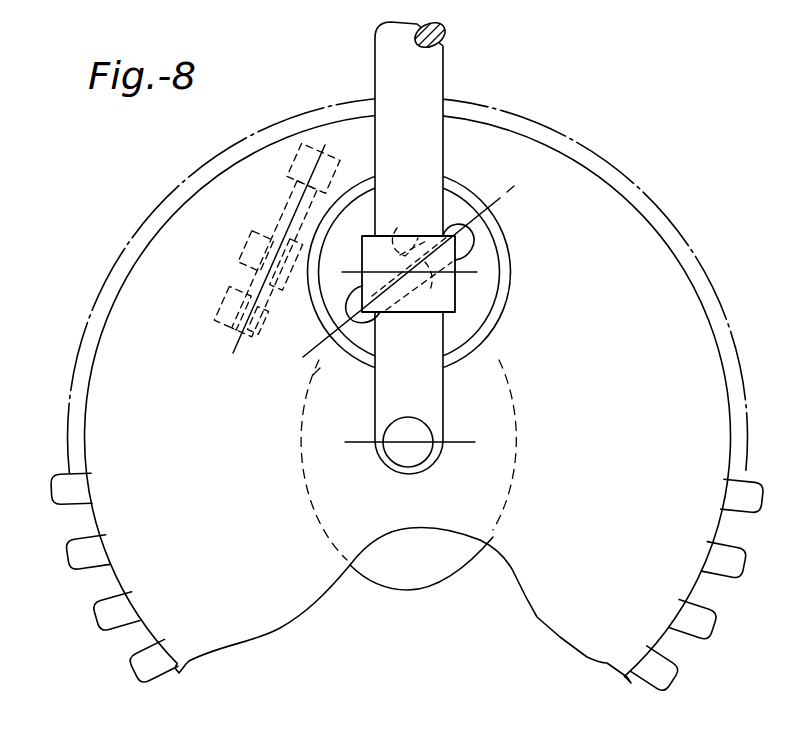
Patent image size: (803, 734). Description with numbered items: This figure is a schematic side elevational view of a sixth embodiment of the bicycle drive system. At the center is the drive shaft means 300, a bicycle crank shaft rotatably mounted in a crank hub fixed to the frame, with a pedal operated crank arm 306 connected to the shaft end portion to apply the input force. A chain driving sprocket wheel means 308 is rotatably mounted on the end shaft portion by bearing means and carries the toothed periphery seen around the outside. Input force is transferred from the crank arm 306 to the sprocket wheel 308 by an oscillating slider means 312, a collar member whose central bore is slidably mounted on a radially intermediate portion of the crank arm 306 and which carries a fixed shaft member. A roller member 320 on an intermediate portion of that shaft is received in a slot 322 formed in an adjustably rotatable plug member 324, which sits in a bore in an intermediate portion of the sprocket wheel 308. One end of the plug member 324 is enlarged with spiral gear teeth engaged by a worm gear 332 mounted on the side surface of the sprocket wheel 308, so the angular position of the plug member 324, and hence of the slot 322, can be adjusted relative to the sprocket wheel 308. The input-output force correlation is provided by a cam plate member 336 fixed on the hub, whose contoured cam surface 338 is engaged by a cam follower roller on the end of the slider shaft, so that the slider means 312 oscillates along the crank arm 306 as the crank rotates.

The drive shaft means 300 is at (423, 430).
The crank arm 306 is at (435, 85).
The chain driving sprocket wheel means 308 is at (665, 282).
The oscillating slider means 312 is at (427, 300).
The roller member 320 is at (397, 223).
The slot 322 is at (445, 235).
The plug member 324 is at (482, 297).
The worm gear 332 is at (268, 228).
The cam plate member 336 is at (470, 489).
The cam surface 338 is at (497, 532).